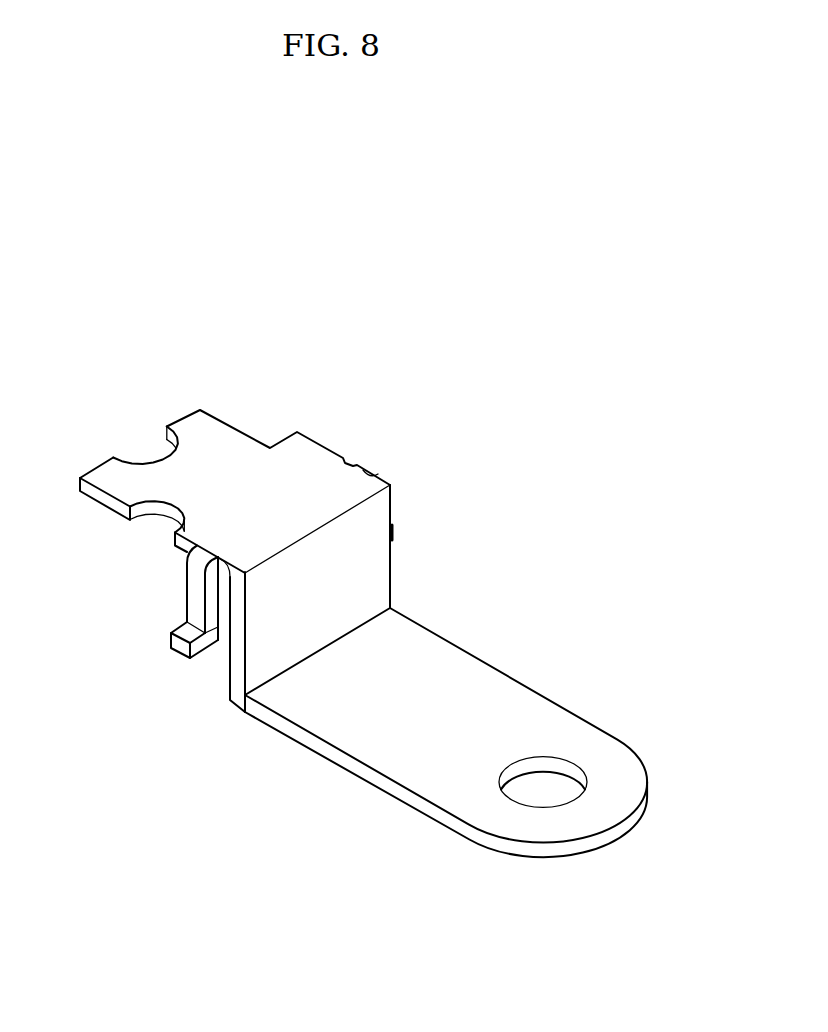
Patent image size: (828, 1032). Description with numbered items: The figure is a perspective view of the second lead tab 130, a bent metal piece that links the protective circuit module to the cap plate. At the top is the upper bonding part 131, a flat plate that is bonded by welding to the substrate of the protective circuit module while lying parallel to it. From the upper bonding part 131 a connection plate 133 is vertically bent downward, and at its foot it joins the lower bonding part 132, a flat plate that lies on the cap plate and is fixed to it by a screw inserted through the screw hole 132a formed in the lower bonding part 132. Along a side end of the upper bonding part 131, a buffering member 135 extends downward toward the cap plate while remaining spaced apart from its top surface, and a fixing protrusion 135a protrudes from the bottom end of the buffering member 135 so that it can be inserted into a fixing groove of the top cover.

The second lead tab 130 is at (285, 360).
The upper bonding part 131 is at (205, 437).
The lower bonding part 132 is at (437, 778).
The screw hole 132a is at (545, 767).
The connection plate 133 is at (388, 547).
The buffering member 135 is at (192, 600).
The fixing protrusion 135a is at (173, 636).